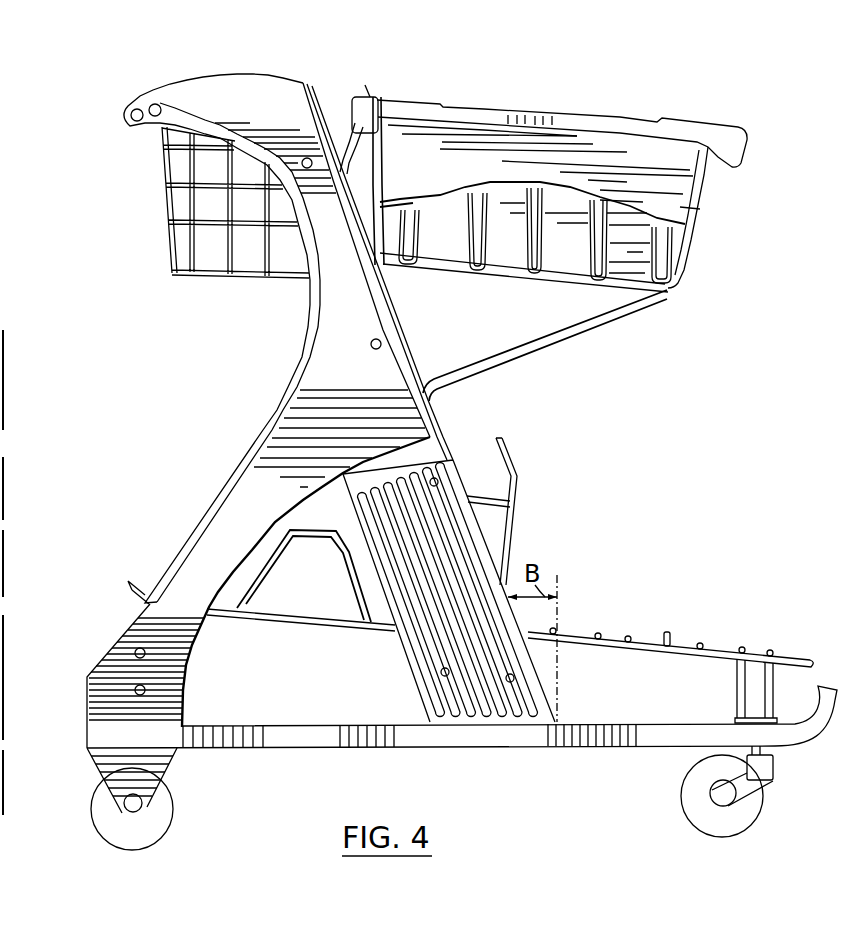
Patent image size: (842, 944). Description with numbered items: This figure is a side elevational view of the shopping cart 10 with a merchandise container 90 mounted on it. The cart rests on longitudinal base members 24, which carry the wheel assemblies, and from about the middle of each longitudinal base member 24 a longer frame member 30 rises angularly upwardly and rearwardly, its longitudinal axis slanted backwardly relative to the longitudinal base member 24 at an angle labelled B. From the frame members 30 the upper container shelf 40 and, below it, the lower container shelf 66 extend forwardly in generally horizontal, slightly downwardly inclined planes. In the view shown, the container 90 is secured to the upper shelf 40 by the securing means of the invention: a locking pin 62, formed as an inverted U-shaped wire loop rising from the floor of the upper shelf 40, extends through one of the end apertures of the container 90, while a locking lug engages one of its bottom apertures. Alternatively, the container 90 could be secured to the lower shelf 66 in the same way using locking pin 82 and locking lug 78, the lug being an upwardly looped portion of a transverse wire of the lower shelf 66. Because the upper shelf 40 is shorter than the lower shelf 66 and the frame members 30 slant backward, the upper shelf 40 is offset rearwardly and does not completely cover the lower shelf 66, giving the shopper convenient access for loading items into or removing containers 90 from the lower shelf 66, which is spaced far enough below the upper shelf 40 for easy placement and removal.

The shopping cart 10 is at (280, 404).
The longitudinal base member 24 is at (636, 722).
The longer frame member 30 is at (405, 403).
The upper container shelf 40 is at (492, 283).
The locking pin 62 is at (374, 82).
The lower container shelf 66 is at (617, 647).
The locking lug 78 is at (670, 632).
The locking pin 82 is at (508, 448).
The merchandise container 90 is at (690, 122).